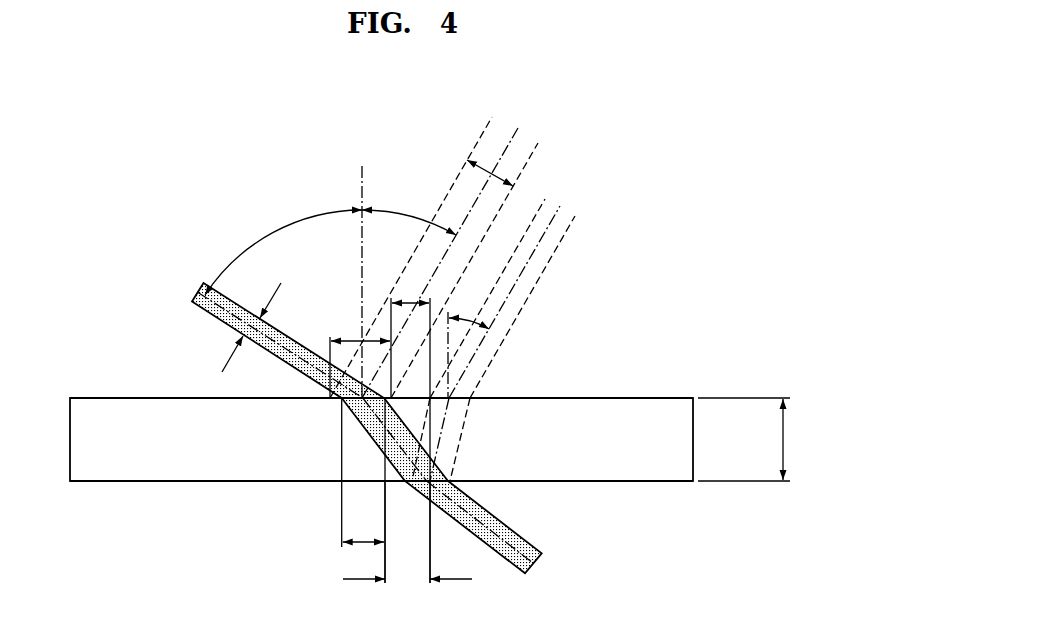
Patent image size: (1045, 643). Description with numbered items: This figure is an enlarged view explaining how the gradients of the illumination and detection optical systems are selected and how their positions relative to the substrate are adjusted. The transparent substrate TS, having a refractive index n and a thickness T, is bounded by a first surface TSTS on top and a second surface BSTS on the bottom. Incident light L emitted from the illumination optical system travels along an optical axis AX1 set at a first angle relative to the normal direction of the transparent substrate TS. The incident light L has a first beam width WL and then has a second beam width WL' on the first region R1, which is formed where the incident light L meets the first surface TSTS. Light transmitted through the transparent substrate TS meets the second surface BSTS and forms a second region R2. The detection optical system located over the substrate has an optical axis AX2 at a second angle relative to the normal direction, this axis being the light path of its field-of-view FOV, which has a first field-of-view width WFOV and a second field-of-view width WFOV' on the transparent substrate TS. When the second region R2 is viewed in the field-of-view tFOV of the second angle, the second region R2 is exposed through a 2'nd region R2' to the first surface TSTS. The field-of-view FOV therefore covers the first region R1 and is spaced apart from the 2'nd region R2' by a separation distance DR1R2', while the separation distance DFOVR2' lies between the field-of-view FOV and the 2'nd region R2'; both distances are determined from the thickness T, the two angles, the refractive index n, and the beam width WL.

The transparent substrate TS is at (693, 438).
The refractive index of the transparent substrate n is at (88, 438).
The first surface of the transparent substrate TSTS is at (658, 398).
The second surface of the transparent substrate BSTS is at (658, 482).
The thickness of the transparent substrate T is at (749, 439).
The incident light L is at (295, 340).
The optical axis of the incident light AX1 is at (203, 308).
The first beam width WL is at (240, 327).
The optical axis of the detection optical system AX2 is at (480, 195).
The field-of-view of the detection optical system FOV is at (534, 152).
The first field-of-view width WFOV is at (497, 164).
The field-of-view of the second angle tFOV is at (549, 262).
The 2'nd region R2' is at (486, 439).
The second field-of-view width WFOV' is at (360, 348).
The separation distance between the field-of-view and the 2'nd region DFOVR2' is at (411, 429).
The first region R1 is at (341, 400).
The second region R2 is at (474, 527).
The second beam width WL' is at (363, 490).
The separation distance between the first region and the 2'nd region DR1R2' is at (407, 545).